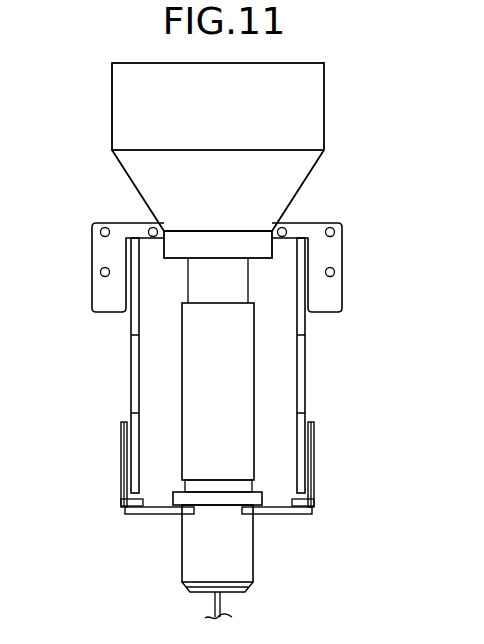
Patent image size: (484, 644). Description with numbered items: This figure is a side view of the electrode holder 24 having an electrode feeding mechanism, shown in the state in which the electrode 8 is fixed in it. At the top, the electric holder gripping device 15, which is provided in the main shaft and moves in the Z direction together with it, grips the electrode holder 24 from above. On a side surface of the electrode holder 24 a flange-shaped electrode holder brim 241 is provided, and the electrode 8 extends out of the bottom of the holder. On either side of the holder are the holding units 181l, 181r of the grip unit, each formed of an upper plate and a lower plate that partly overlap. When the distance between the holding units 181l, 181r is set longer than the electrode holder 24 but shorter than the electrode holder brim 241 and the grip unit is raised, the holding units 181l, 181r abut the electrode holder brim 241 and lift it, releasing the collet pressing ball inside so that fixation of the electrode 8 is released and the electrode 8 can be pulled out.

The electric holder gripping device 15 is at (301, 107).
The electrode holder having an electrode feeding mechanism 24 is at (237, 365).
The electrode holder brim 241 is at (250, 498).
The holding unit 181r is at (150, 515).
The holding unit 181l is at (280, 513).
The electrode 8 is at (221, 602).